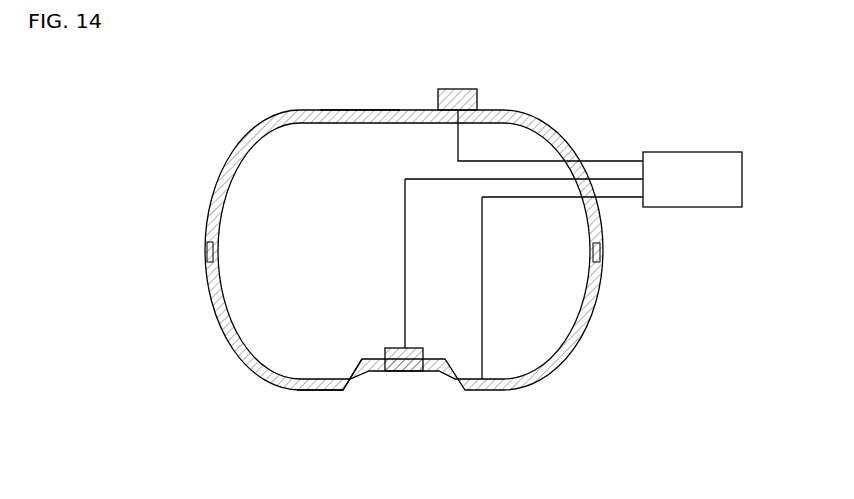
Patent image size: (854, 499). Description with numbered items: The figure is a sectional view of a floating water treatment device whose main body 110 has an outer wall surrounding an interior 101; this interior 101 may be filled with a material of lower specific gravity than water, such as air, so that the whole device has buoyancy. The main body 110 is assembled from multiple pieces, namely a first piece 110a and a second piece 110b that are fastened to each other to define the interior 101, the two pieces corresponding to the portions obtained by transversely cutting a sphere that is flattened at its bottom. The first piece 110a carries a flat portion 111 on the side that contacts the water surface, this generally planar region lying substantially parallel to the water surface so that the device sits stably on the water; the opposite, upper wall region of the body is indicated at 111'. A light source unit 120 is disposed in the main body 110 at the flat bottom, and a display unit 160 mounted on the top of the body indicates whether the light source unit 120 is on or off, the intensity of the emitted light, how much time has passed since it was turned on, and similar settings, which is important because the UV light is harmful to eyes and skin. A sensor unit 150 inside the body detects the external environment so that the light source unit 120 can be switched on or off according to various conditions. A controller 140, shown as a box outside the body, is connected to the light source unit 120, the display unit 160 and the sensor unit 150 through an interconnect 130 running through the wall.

The main body 110 is at (314, 250).
The first piece 110a is at (209, 290).
The second piece 110b is at (209, 209).
The flat portion 111 is at (296, 390).
The top wall of housing 111' is at (360, 84).
The light source unit 120 is at (400, 383).
The interconnect 130 is at (540, 156).
The controller 140 is at (716, 151).
The sensor unit 150 is at (482, 383).
The display unit 160 is at (458, 89).
The interior 101 is at (530, 325).